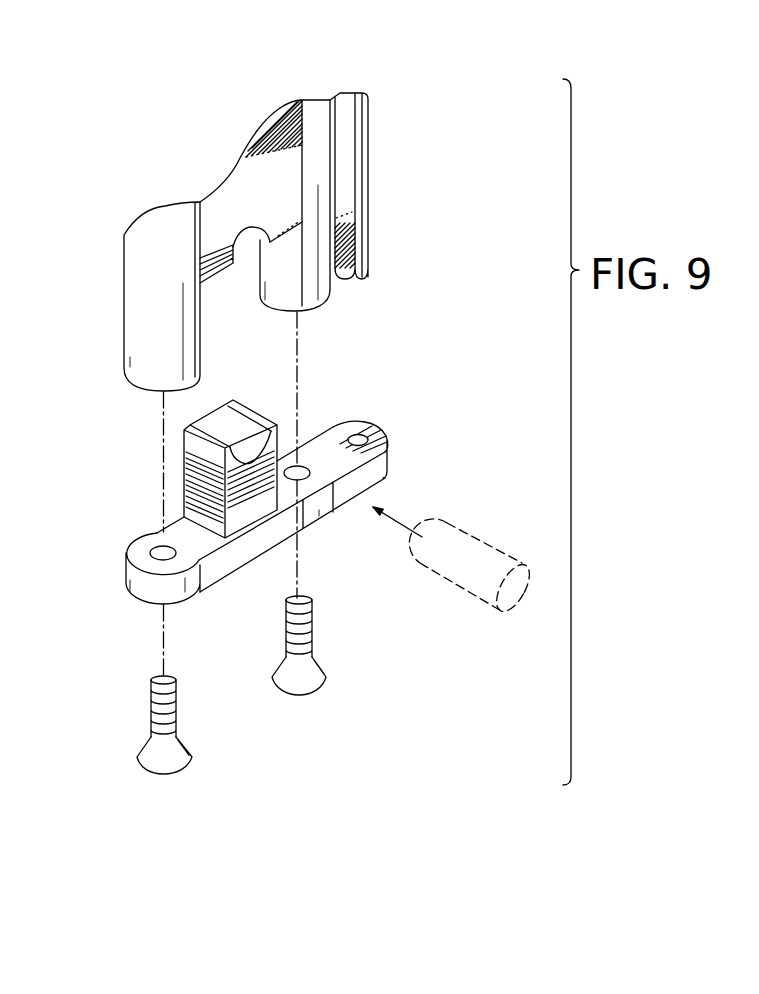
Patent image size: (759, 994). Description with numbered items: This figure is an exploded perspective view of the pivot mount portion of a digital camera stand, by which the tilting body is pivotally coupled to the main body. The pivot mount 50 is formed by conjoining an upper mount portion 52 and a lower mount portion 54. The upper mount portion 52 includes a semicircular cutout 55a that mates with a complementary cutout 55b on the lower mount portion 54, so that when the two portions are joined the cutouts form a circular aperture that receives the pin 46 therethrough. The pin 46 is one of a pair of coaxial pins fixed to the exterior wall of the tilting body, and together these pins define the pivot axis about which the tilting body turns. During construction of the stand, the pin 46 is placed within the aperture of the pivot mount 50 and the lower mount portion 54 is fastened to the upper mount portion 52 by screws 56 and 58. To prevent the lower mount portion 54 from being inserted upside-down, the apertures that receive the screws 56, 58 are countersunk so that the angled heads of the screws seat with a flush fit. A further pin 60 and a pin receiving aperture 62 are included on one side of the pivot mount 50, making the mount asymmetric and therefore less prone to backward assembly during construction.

The pin 46 is at (461, 592).
The pivot mount 50 is at (413, 266).
The upper mount portion 52 is at (238, 152).
The lower mount portion 54 is at (126, 538).
The semicircular cutout 55a is at (243, 235).
The complementary cutout 55b is at (221, 423).
The screw 56 is at (150, 716).
The screw 58 is at (312, 619).
The further pin 60 is at (357, 279).
The pin receiving aperture 62 is at (362, 424).